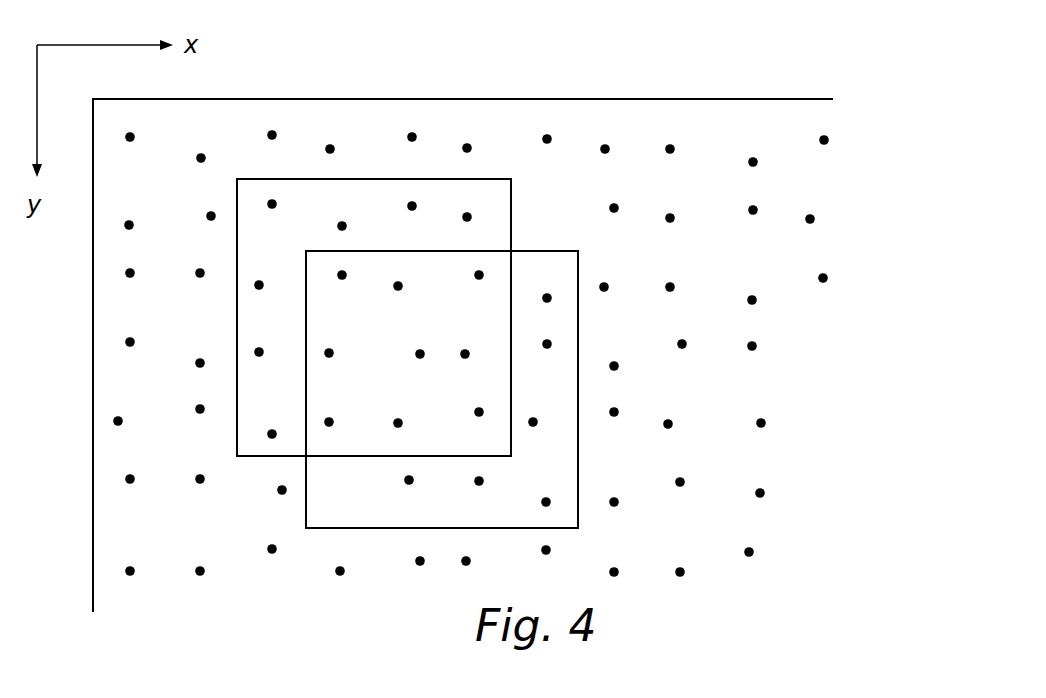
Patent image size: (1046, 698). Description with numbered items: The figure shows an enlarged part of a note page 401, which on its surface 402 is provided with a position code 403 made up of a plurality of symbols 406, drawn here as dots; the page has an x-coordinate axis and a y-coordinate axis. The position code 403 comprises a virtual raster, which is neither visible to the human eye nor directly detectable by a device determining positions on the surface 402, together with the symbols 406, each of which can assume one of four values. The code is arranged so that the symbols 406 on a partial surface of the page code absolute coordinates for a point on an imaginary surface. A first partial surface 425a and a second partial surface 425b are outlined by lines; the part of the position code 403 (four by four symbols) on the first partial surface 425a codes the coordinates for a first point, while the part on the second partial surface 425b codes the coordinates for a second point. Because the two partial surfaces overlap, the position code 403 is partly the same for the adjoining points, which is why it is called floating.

The note page 401 is at (673, 79).
The surface 402 is at (254, 628).
The position code 403 is at (785, 335).
The symbols 406 is at (615, 573).
The first partial surface 425a is at (365, 202).
The second partial surface 425b is at (530, 268).